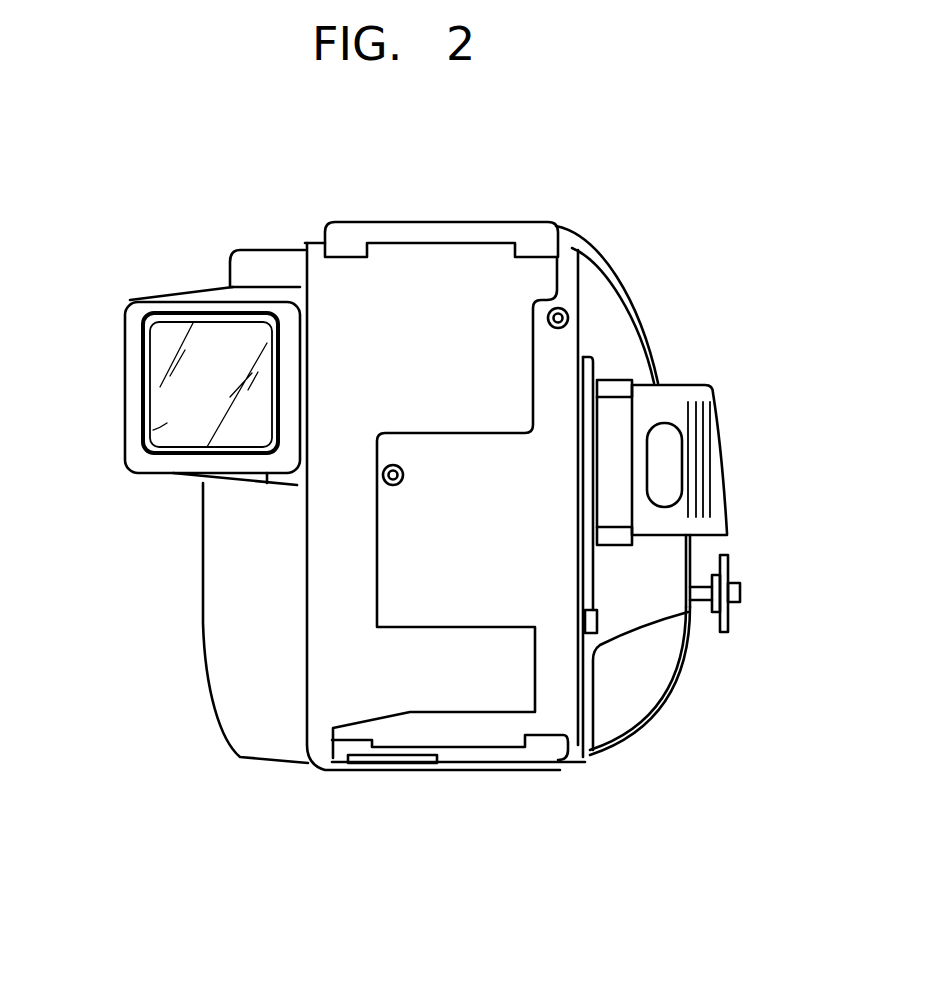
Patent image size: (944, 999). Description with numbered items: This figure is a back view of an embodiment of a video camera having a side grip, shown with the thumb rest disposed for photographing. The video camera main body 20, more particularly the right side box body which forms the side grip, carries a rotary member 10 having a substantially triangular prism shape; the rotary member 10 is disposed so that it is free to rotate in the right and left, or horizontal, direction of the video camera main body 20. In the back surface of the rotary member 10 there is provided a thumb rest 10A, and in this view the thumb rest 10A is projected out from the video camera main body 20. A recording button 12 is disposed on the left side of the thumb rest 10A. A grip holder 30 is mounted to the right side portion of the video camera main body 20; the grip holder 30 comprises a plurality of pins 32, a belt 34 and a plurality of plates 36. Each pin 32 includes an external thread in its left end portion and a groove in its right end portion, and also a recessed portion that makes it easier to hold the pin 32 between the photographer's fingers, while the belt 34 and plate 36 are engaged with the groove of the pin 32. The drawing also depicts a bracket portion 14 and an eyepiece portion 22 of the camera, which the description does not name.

The rotary member 10 is at (722, 408).
The thumb rest 10A is at (707, 397).
The recording button 12 is at (667, 492).
The mounting bracket 14 is at (612, 382).
The video camera main body 20 is at (684, 312).
The viewfinder eyepiece 22 is at (167, 425).
The grip holder 30 is at (750, 603).
The pin 32 is at (742, 587).
The belt 34 is at (697, 622).
The plate 36 is at (730, 620).